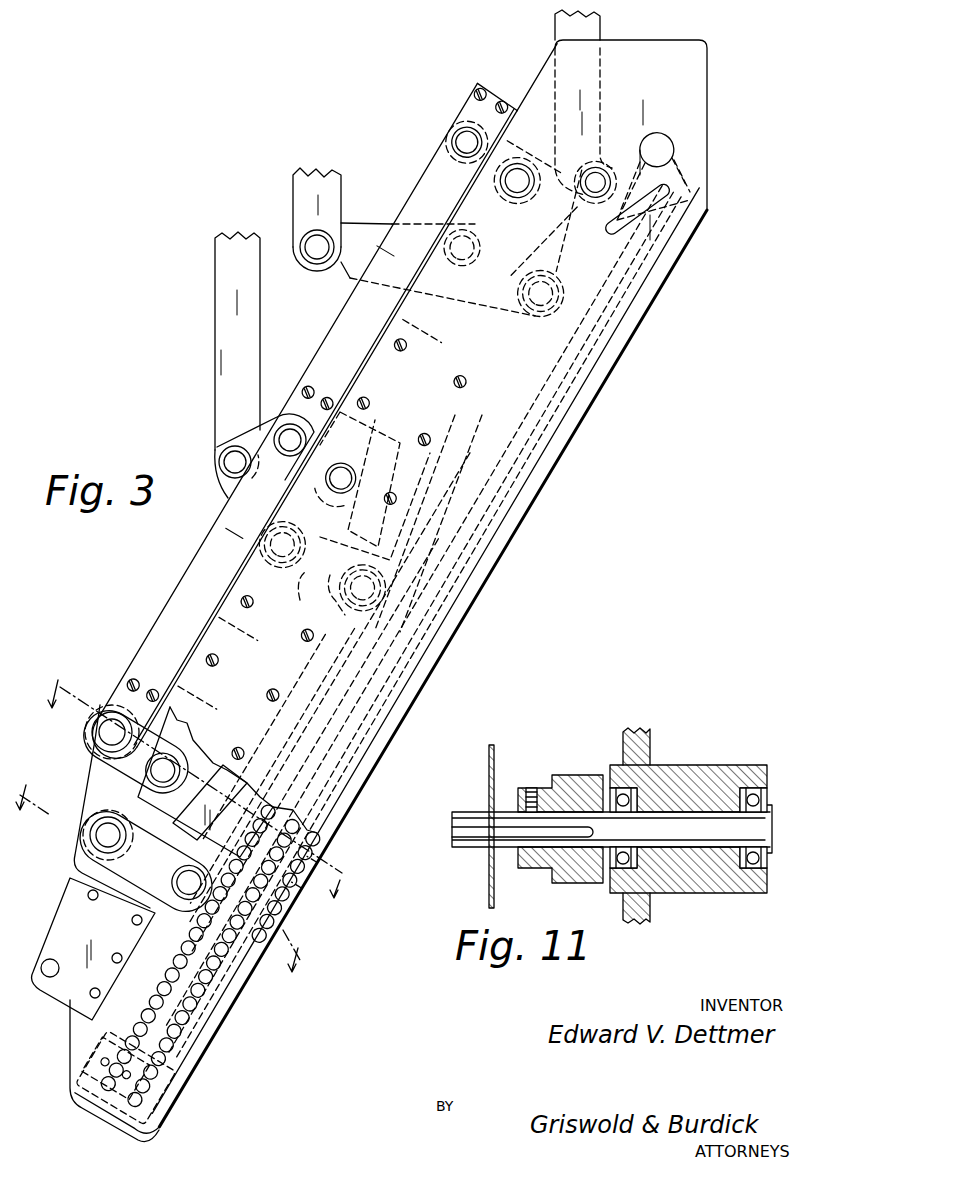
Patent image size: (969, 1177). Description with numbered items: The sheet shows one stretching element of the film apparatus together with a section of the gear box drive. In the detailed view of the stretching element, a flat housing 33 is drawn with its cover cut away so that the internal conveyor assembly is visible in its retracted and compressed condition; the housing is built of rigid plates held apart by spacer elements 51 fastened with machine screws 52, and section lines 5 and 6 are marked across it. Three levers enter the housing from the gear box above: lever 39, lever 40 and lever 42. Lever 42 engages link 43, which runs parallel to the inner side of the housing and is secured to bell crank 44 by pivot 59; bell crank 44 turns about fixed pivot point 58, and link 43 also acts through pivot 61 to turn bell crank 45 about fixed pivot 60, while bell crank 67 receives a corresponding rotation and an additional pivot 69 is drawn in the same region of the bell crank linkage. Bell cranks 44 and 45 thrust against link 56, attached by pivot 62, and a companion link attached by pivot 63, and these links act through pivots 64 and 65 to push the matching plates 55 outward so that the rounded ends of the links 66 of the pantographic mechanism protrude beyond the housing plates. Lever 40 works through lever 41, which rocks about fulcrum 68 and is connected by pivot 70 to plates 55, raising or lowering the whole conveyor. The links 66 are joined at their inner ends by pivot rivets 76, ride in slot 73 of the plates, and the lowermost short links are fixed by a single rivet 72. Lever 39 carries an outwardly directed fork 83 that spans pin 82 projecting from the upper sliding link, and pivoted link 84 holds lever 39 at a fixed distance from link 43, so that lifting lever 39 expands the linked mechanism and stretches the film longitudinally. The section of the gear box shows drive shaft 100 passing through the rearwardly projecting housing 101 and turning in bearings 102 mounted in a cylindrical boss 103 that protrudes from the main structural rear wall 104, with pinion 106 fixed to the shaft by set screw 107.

In FIG. 3, the housing 33 is at (450, 620).
In FIG. 3, the lever 39 is at (598, 30).
In FIG. 3, the lever 40 is at (293, 186).
In FIG. 3, the lever 41 is at (378, 224).
In FIG. 3, the lever 42 is at (215, 262).
In FIG. 3, the link 43 is at (318, 370).
In FIG. 3, the bell crank 44 is at (228, 498).
In FIG. 3, the bell crank 45 is at (92, 795).
In FIG. 3, the spacer element 51 is at (440, 346).
In FIG. 3, the machine screw 52 is at (368, 404).
In FIG. 3, the matching plates 55 is at (680, 165).
In FIG. 3, the link 56 is at (296, 598).
In FIG. 3, the fixed pivot point 58 is at (344, 476).
In FIG. 3, the pivot 59 is at (290, 428).
In FIG. 3, the fixed pivot 60 is at (152, 775).
In FIG. 3, the pivot 61 is at (100, 733).
In FIG. 3, the pivot 62 is at (275, 560).
In FIG. 3, the pivot 63 is at (92, 835).
In FIG. 3, the pivot 64 is at (375, 590).
In FIG. 3, the pivot 65 is at (160, 890).
In FIG. 3, the link 66 is at (196, 1040).
In FIG. 3, the bell crank 67 is at (510, 228).
In FIG. 3, the fulcrum 68 is at (464, 258).
In FIG. 3, the pivot 69 is at (512, 186).
In FIG. 3, the pivot 70 is at (540, 305).
In FIG. 3, the rivet 72 is at (130, 1088).
In FIG. 3, the slot 73 is at (685, 192).
In FIG. 3, the pivot rivet 76 is at (172, 968).
In FIG. 3, the pin 82 is at (660, 262).
In FIG. 3, the fork 83 is at (632, 215).
In FIG. 3, the pivoted link 84 is at (548, 172).
In FIG. 3, the section line 5- 5 is at (186, 799).
In FIG. 3, the section line 6- 6 is at (156, 882).
In FIG. 11, the drive shaft 100 is at (470, 812).
In FIG. 11, the rearwardly projecting housing 101 is at (489, 884).
In FIG. 11, the bearing 102 is at (618, 792).
In FIG. 11, the cylindrical boss 103 is at (710, 885).
In FIG. 11, the main structural rear wall 104 is at (640, 753).
In FIG. 11, the pinion 106 is at (540, 868).
In FIG. 11, the set screw 107 is at (531, 788).